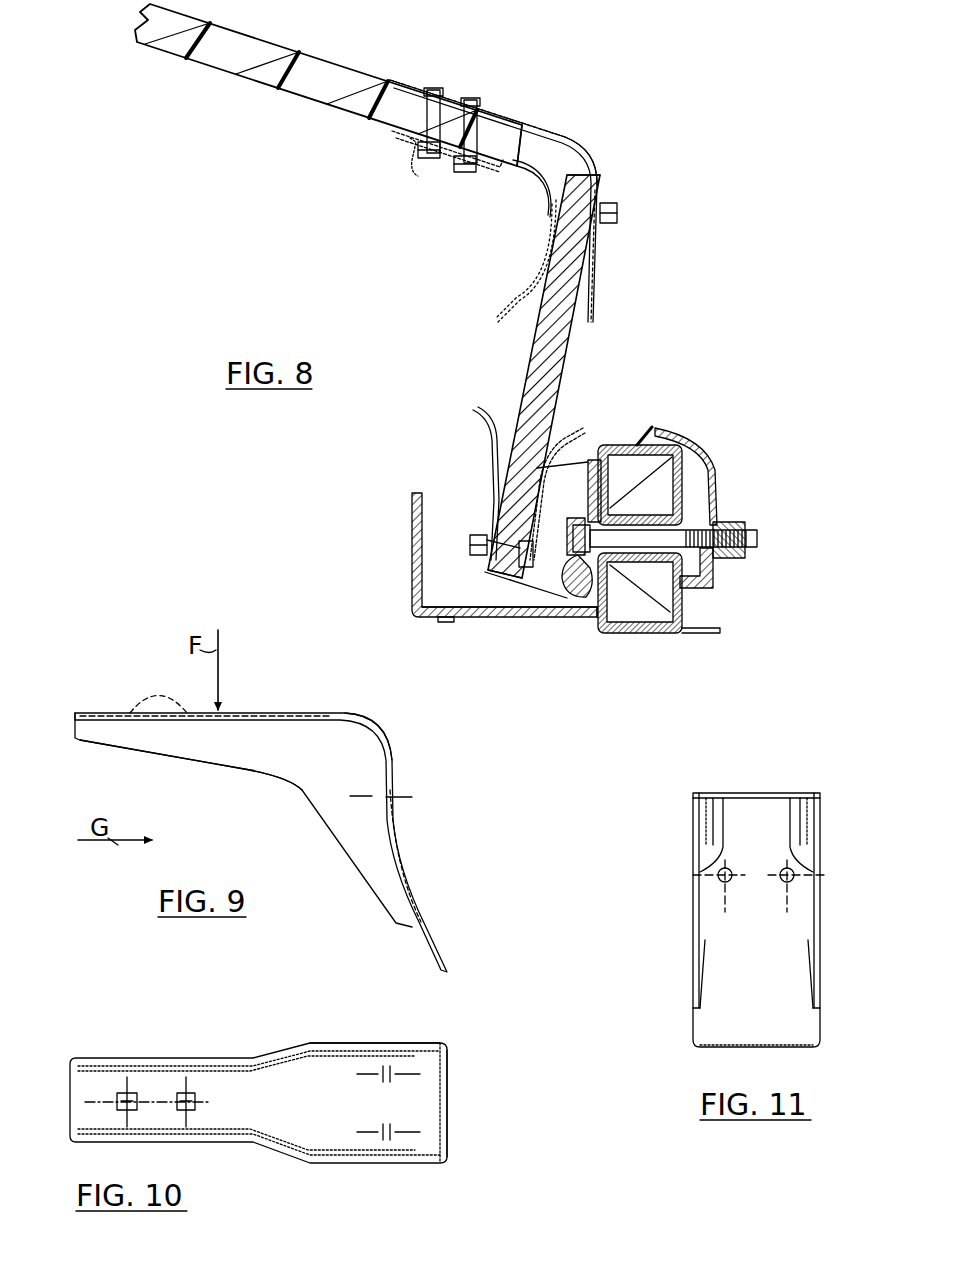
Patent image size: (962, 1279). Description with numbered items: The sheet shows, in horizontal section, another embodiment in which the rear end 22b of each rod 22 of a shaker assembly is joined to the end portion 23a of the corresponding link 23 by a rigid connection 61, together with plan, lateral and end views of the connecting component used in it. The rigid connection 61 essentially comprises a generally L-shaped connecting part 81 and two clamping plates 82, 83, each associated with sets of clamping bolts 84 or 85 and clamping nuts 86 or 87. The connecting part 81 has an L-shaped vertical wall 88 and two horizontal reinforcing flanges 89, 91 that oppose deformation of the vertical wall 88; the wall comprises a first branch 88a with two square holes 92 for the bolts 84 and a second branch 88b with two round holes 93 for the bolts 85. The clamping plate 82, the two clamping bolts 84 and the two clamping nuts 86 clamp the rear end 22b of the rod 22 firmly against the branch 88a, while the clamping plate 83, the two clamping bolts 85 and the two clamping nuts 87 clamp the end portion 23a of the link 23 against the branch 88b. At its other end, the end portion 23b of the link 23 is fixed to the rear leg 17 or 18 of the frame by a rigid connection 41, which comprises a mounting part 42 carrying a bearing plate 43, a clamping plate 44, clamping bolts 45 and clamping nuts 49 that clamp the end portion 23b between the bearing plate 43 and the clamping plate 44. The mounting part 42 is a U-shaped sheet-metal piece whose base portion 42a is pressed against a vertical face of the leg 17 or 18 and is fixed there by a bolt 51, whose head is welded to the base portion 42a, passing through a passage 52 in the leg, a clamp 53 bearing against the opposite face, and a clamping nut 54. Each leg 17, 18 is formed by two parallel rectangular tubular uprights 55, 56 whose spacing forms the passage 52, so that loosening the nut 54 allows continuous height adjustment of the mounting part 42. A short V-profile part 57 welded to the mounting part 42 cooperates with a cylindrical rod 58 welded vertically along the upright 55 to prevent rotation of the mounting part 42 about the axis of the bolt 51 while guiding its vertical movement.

In FIG. 8, the rod 22 is at (170, 55).
In FIG. 8, the rear end of rod 22b is at (376, 118).
In FIG. 8, the link 23 is at (532, 386).
In FIG. 8, the end portion of link 23a is at (586, 226).
In FIG. 8, the end portion of link 23b is at (488, 574).
In FIG. 8, the rigid connection 41 is at (456, 484).
In FIG. 8, the mounting part 42 is at (535, 602).
In FIG. 8, the base portion 42a is at (590, 495).
In FIG. 8, the bearing plate 43 is at (572, 426).
In FIG. 8, the clamping plate 44 is at (488, 452).
In FIG. 8, the clamping bolts 45 is at (468, 547).
In FIG. 8, the clamping nuts 49 is at (495, 508).
In FIG. 8, the bolt 51 is at (760, 541).
In FIG. 8, the passage 52 is at (687, 524).
In FIG. 8, the clamp 53 is at (715, 583).
In FIG. 8, the clamping nut 54 is at (735, 522).
In FIG. 8, the tubular upright 55 is at (641, 635).
In FIG. 8, the tubular upright 56 is at (610, 510).
In FIG. 8, the V-profile part 57 is at (562, 602).
In FIG. 8, the cylindrical rod 58 is at (594, 624).
In FIG. 8, the rigid connection 61 is at (668, 128).
In FIG. 8, the leg of frame 17 is at (733, 653).
In FIG. 8, the leg of frame 18 is at (683, 636).
In FIG. 8, the connecting part 81 is at (601, 146).
In FIG. 9, the connecting part 81 is at (110, 706).
In FIG. 10, the connecting part 81 is at (140, 1022).
In FIG. 11, the connecting part 81 is at (678, 797).
In FIG. 8, the clamping plate 82 is at (412, 146).
In FIG. 8, the clamping plate 83 is at (538, 272).
In FIG. 8, the clamping bolts 84 is at (480, 102).
In FIG. 8, the clamping bolts 85 is at (552, 202).
In FIG. 8, the clamping nuts 86 is at (461, 172).
In FIG. 8, the clamping nuts 87 is at (619, 212).
In FIG. 8, the vertical wall 88 is at (604, 160).
In FIG. 9, the vertical wall 88 is at (386, 755).
In FIG. 10, the vertical wall 88 is at (447, 1048).
In FIG. 8, the first branch 88a is at (546, 130).
In FIG. 9, the first branch 88a is at (283, 714).
In FIG. 10, the first branch 88a is at (333, 1078).
In FIG. 11, the first branch 88a is at (777, 793).
In FIG. 8, the second branch 88b is at (598, 282).
In FIG. 9, the second branch 88b is at (394, 832).
In FIG. 10, the second branch 88b is at (449, 1103).
In FIG. 11, the second branch 88b is at (720, 1029).
In FIG. 9, the reinforcing flange 89 is at (297, 782).
In FIG. 10, the reinforcing flange 89 is at (287, 1152).
In FIG. 11, the reinforcing flange 89 is at (803, 838).
In FIG. 8, the reinforcing flange 91 is at (545, 172).
In FIG. 10, the reinforcing flange 91 is at (287, 1057).
In FIG. 11, the reinforcing flange 91 is at (707, 832).
In FIG. 9, the square holes 92 is at (158, 691).
In FIG. 10, the square holes 92 is at (181, 1093).
In FIG. 9, the round holes 93 is at (394, 798).
In FIG. 10, the round holes 93 is at (400, 1072).
In FIG. 11, the round holes 93 is at (724, 881).